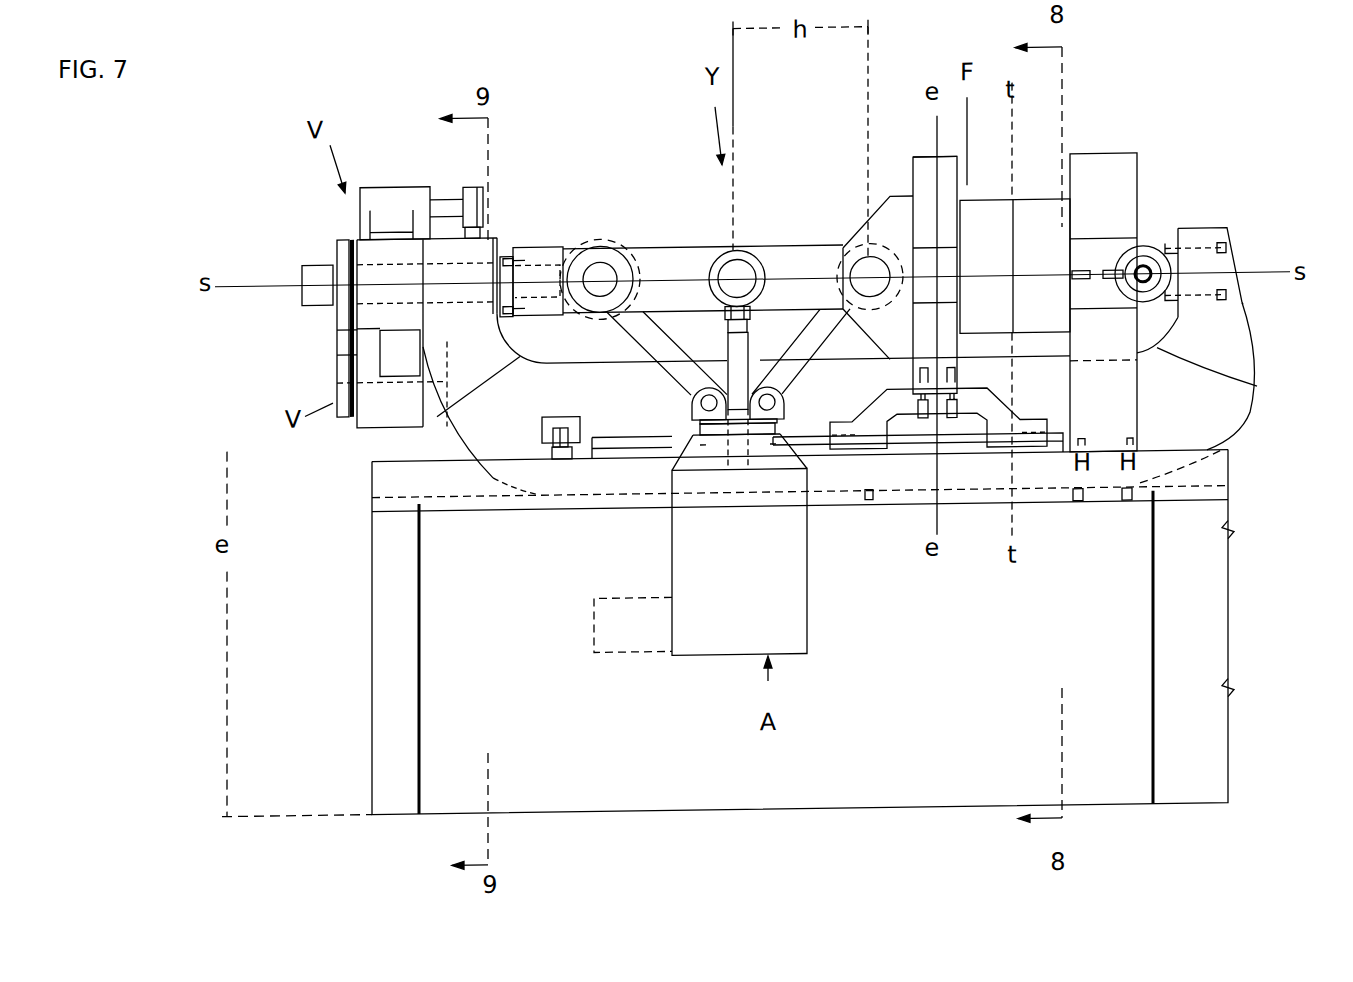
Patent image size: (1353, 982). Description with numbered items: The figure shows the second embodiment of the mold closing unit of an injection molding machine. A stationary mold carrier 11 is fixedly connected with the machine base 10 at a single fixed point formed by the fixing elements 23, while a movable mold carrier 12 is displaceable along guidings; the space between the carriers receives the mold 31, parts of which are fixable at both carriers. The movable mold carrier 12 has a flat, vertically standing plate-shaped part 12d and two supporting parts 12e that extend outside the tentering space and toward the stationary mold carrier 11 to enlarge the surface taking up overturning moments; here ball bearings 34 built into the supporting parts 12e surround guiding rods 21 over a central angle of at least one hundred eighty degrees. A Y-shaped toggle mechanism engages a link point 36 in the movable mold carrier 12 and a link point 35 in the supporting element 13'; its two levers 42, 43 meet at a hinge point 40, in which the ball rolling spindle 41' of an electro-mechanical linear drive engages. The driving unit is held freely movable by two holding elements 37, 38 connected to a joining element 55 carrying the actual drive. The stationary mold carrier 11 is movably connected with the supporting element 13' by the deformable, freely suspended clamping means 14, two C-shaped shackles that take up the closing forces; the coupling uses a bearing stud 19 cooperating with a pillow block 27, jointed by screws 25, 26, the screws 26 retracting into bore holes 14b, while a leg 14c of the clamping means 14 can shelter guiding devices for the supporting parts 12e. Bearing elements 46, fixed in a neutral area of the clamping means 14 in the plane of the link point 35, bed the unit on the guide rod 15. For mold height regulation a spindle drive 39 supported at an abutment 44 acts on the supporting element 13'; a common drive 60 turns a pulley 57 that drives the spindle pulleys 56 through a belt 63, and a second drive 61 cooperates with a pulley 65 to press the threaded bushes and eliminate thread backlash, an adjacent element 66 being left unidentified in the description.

The machine base 10 is at (997, 681).
The stationary mold carrier 11 is at (1118, 163).
The movable mold carrier 12 is at (919, 146).
The plate-shaped part 12d is at (925, 180).
The supporting parts 12e is at (980, 400).
The supporting element 13' is at (783, 302).
The clamping means 14 is at (1264, 377).
The bore holes 14b is at (1265, 306).
The leg 14c is at (670, 418).
The guide rod 15 is at (513, 468).
The bearing stud 19 is at (1145, 290).
The guiding rods 21 is at (803, 433).
The fixing elements 23 is at (1145, 445).
The screws 25 is at (1093, 247).
The screws 26 is at (1246, 208).
The pillow block 27 is at (1157, 252).
The mold 31 is at (1042, 225).
The ball bearings 34 is at (1052, 503).
The link point 35 is at (598, 272).
The link point 36 is at (862, 260).
The holding element 37 is at (650, 340).
The holding element 38 is at (815, 353).
The spindle drive 39 is at (313, 270).
The hinge point 40 is at (738, 276).
The ball rolling spindle 41' is at (744, 388).
The lever 42 is at (667, 255).
The lever 43 is at (802, 255).
The abutment 44 is at (385, 249).
The bearing element 46 is at (552, 416).
The joining element 55 is at (807, 478).
The pulleys 56 is at (343, 240).
The pulley 57 is at (337, 362).
The common drive 60 is at (390, 406).
The drive 61 is at (398, 193).
The belt 63 is at (345, 330).
The pulley 65 is at (485, 233).
The adjusting screw 66 is at (473, 202).